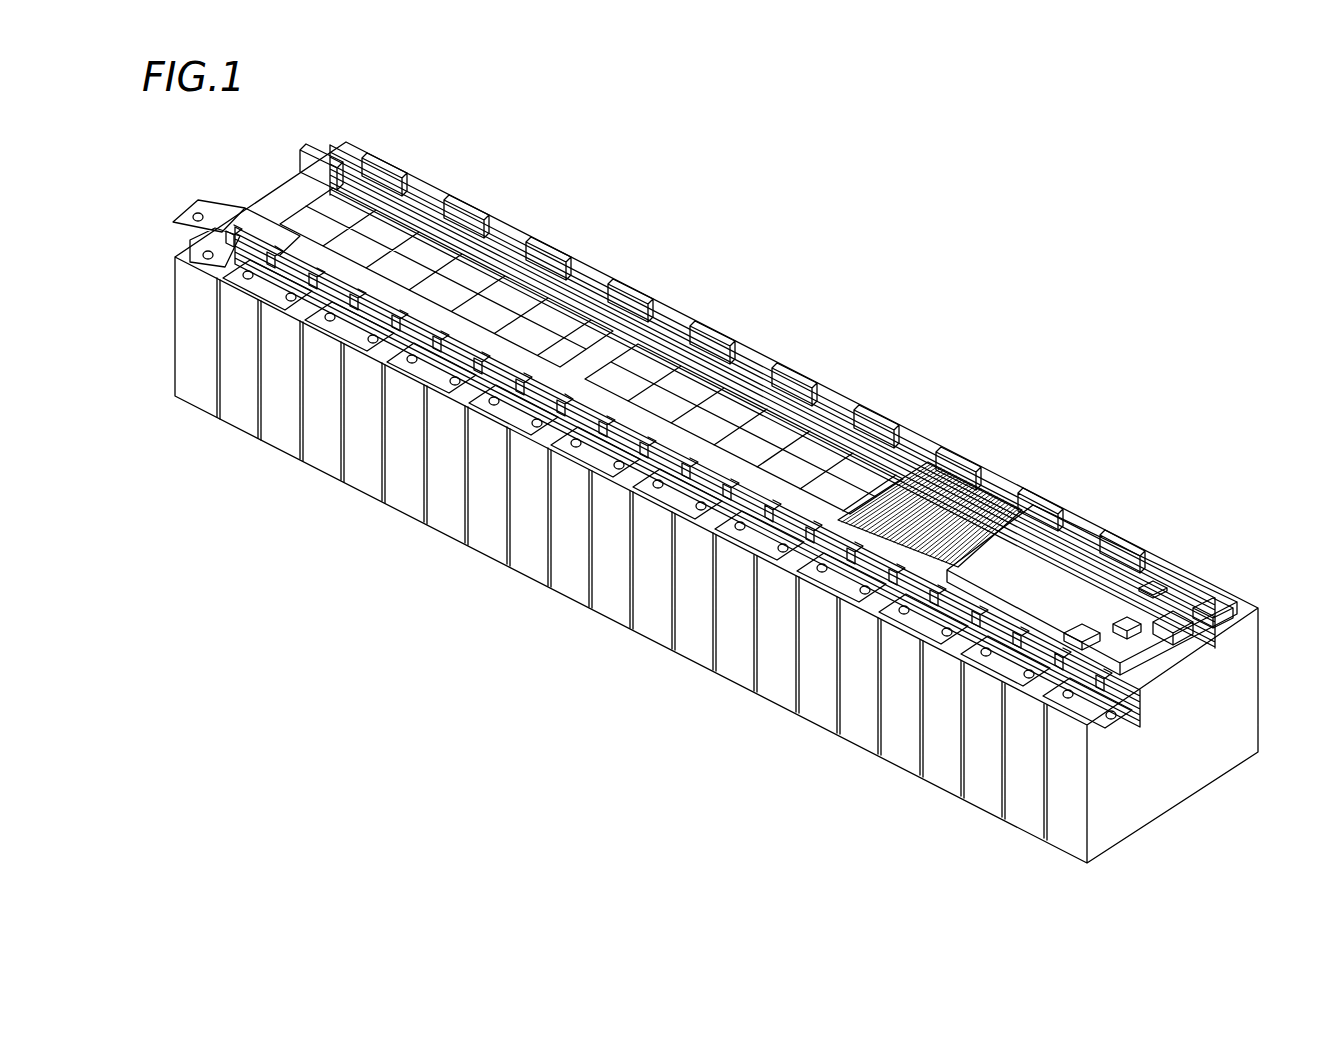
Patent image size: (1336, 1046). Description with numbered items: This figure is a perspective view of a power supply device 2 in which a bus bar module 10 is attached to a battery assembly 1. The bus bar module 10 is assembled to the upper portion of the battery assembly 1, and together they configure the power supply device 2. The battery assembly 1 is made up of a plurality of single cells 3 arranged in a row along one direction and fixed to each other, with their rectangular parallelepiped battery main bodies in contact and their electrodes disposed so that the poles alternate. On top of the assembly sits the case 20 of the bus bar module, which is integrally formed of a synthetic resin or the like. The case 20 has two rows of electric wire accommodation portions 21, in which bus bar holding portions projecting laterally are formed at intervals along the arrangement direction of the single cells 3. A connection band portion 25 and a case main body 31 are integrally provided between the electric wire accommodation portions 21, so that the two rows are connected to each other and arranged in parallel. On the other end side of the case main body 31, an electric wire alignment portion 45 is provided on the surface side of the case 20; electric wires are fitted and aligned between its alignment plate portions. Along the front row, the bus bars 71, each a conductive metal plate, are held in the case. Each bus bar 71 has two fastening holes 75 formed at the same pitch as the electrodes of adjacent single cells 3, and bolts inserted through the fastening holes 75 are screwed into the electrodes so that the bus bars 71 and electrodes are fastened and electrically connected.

The battery assembly 1 is at (632, 648).
The power supply device 2 is at (762, 256).
The single cell 3 is at (282, 436).
The bus bar module 10 is at (855, 385).
The case 20 is at (933, 436).
The electric wire accommodation portion 21 is at (498, 230).
The connection band portion 25 is at (640, 280).
The case main body 31 is at (1116, 570).
The electric wire alignment portion 45 is at (945, 468).
The bus bar 71 is at (858, 586).
The fastening hole 75 is at (766, 566).